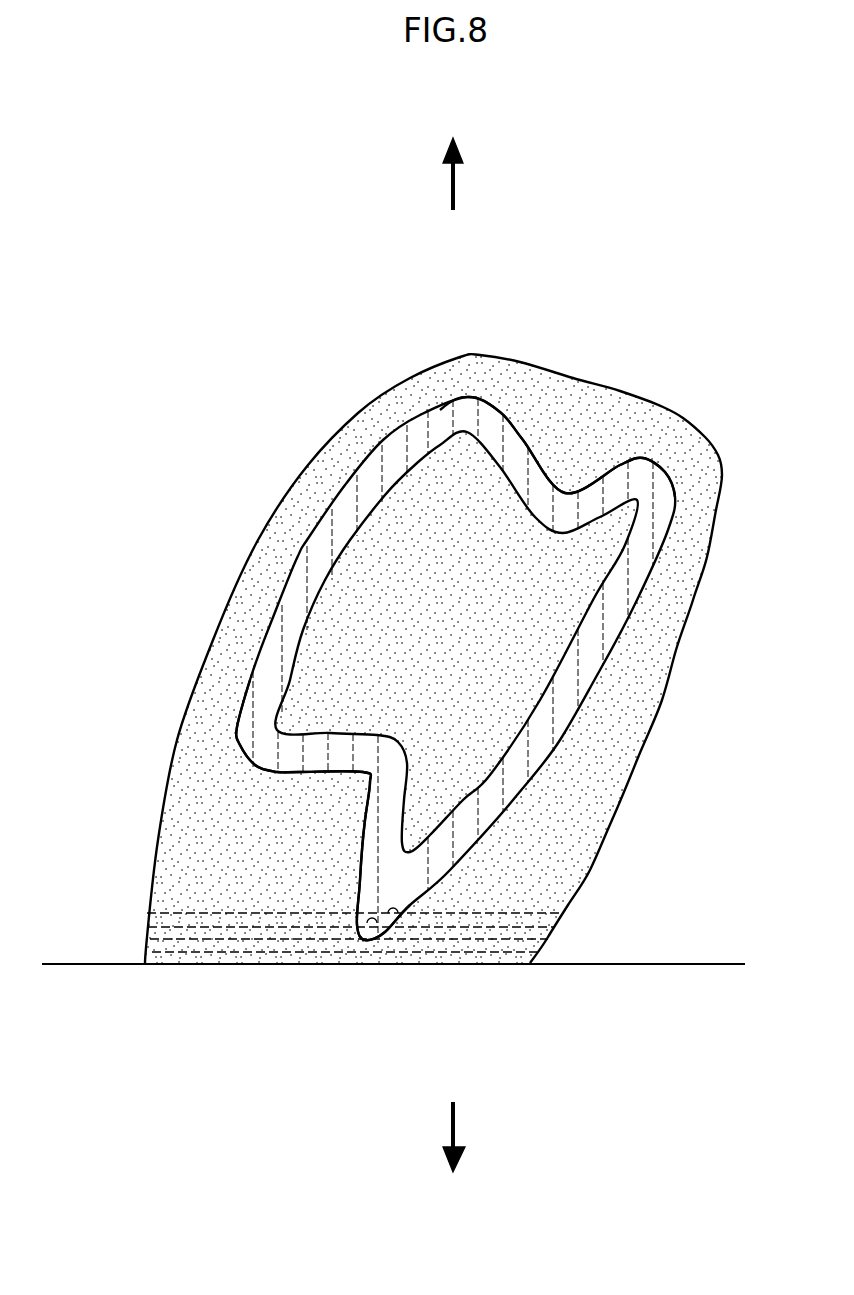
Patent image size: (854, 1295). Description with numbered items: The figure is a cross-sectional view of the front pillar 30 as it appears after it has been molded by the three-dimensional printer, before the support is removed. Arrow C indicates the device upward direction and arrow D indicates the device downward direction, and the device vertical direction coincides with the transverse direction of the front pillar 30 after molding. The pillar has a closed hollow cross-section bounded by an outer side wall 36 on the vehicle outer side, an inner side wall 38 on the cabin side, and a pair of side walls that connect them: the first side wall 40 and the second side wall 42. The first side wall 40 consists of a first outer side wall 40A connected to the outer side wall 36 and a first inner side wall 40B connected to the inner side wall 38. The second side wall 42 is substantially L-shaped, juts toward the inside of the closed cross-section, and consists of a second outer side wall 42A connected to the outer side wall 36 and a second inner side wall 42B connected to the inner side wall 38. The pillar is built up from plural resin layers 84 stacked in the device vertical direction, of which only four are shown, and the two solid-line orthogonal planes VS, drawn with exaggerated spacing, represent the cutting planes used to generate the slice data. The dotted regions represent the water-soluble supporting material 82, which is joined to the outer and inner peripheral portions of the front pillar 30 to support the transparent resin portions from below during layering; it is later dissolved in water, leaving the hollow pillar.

The front pillar 30 is at (483, 390).
The outer side wall 36 is at (297, 558).
The inner side wall 38 is at (603, 667).
The first side wall 40 is at (158, 1010).
The first outer side wall 40A is at (287, 773).
The first inner side wall 40B is at (357, 878).
The second side wall 42 is at (705, 273).
The second outer side wall 42A is at (528, 445).
The second inner side wall 42B is at (622, 462).
The supporting material 82 is at (323, 473).
The resin layer 84 is at (537, 962).
The orthogonal plane VS is at (393, 917).
The arrow C (device upward) C is at (450, 185).
The arrow D (device downward) D is at (450, 1131).